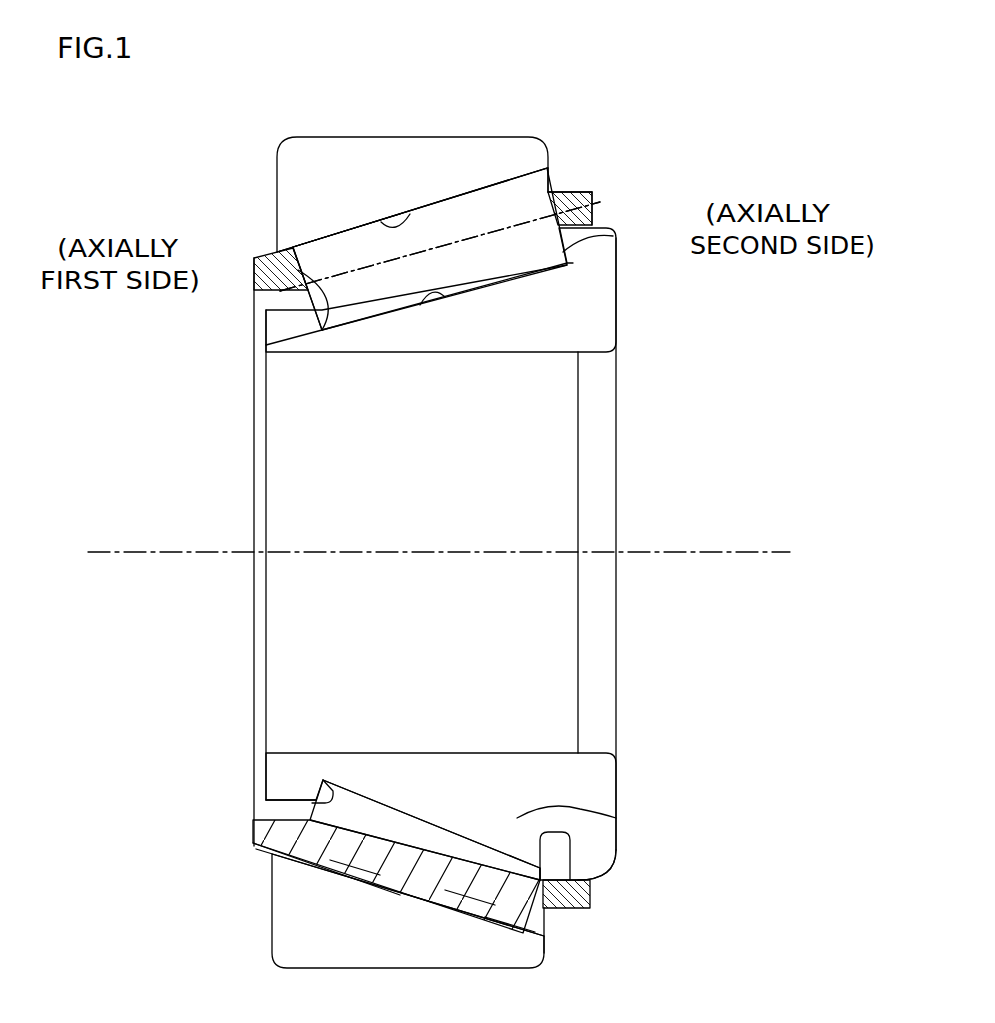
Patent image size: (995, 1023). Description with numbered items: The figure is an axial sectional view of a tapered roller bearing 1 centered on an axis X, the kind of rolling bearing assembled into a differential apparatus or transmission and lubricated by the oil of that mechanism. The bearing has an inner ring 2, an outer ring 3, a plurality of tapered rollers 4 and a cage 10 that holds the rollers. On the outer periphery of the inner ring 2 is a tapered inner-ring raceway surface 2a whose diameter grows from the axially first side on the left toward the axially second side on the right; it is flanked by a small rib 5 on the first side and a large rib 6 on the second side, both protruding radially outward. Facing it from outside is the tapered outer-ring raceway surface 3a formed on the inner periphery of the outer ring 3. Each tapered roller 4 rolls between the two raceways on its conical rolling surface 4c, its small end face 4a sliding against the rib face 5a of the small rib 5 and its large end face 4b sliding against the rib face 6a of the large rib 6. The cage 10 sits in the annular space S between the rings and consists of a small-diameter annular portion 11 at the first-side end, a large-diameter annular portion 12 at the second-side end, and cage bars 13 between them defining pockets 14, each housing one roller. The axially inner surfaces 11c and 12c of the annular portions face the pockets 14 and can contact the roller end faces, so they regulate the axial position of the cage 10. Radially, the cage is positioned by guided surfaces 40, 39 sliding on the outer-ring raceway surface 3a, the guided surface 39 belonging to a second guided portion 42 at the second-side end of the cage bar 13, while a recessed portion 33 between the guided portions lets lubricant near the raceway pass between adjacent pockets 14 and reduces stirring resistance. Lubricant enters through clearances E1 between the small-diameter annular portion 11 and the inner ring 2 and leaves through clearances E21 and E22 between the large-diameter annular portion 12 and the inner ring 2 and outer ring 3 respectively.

The tapered roller bearing 1 is at (268, 130).
The inner ring 2 is at (504, 354).
The inner-ring raceway surface 2a is at (431, 302).
The outer ring 3 is at (411, 137).
The outer-ring raceway surface 3a is at (386, 218).
The tapered roller 4 is at (549, 180).
The small end face 4a is at (300, 274).
The large end face 4b is at (613, 236).
The rolling surface 4c is at (588, 811).
The small rib 5 is at (308, 792).
The rib face 5a is at (313, 797).
The large rib 6 is at (613, 856).
The rib face 6a is at (572, 841).
The cage 10 is at (257, 248).
The small-diameter annular portion 11 is at (256, 822).
The axially inner surface 11c is at (266, 345).
The large-diameter annular portion 12 is at (592, 897).
The axially inner surface 12c is at (594, 192).
The cage bar 13 is at (353, 867).
The pocket 14 is at (334, 250).
The recessed portion 33 is at (468, 897).
The guided surface 39 is at (505, 927).
The guided surface 40 is at (318, 871).
The second guided portion 42 is at (549, 924).
The annular space S is at (469, 213).
The axis X is at (726, 551).
The clearance E1 is at (273, 300).
The clearance E21 is at (594, 226).
The clearance E22 is at (556, 181).